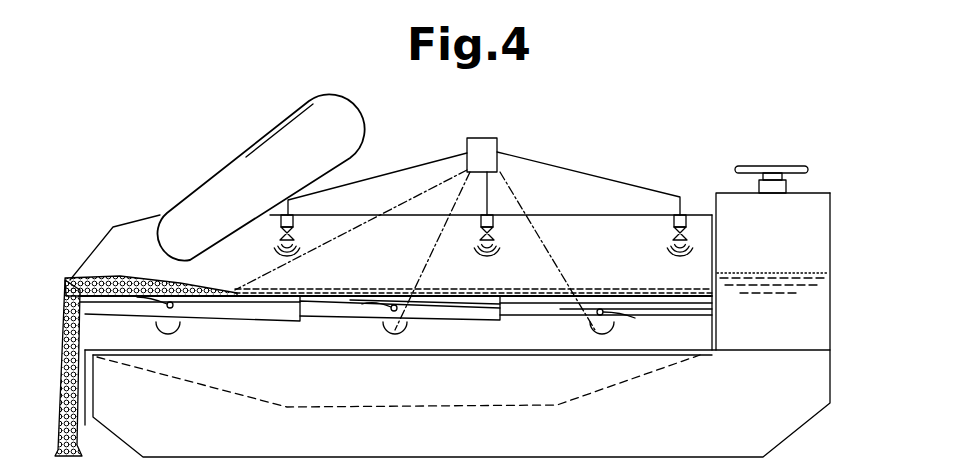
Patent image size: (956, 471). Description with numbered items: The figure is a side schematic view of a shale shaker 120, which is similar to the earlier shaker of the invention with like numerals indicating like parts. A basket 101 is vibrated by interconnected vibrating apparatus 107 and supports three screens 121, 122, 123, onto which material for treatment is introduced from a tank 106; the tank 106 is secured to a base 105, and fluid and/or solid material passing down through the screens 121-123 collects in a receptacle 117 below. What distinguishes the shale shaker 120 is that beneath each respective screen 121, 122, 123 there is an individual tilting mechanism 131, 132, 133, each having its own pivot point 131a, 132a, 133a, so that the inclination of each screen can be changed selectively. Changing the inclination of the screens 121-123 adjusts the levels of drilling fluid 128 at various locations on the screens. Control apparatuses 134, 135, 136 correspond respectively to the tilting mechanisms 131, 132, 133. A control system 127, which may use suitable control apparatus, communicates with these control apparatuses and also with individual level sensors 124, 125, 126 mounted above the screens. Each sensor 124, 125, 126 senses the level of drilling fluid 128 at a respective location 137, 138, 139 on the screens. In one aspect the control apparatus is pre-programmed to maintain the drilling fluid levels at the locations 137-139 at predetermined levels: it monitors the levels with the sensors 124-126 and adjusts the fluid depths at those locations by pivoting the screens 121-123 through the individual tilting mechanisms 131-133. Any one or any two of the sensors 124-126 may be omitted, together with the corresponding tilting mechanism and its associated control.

The basket 101 is at (553, 232).
The base 105 is at (770, 412).
The tank 106 is at (790, 332).
The vibrating apparatus 107 is at (243, 224).
The receptacle 117 is at (342, 407).
The shale shaker 120 is at (616, 163).
The screen 121 is at (270, 303).
The screen 122 is at (350, 303).
The screen 123 is at (557, 310).
The level sensor 124 is at (275, 213).
The level sensor 125 is at (498, 214).
The level sensor 126 is at (690, 213).
The control system 127 is at (480, 140).
The drilling fluid 128 is at (602, 290).
The tilting mechanism 131 is at (120, 310).
The pivot point 131a is at (128, 283).
The tilting mechanism 132 is at (458, 315).
The pivot point 132a is at (391, 306).
The tilting mechanism 133 is at (660, 318).
The pivot point 133a is at (632, 320).
The control apparatus 134 is at (163, 323).
The control apparatus 135 is at (397, 325).
The control apparatus 136 is at (607, 323).
The location 137 is at (288, 290).
The location 138 is at (487, 292).
The location 139 is at (711, 271).